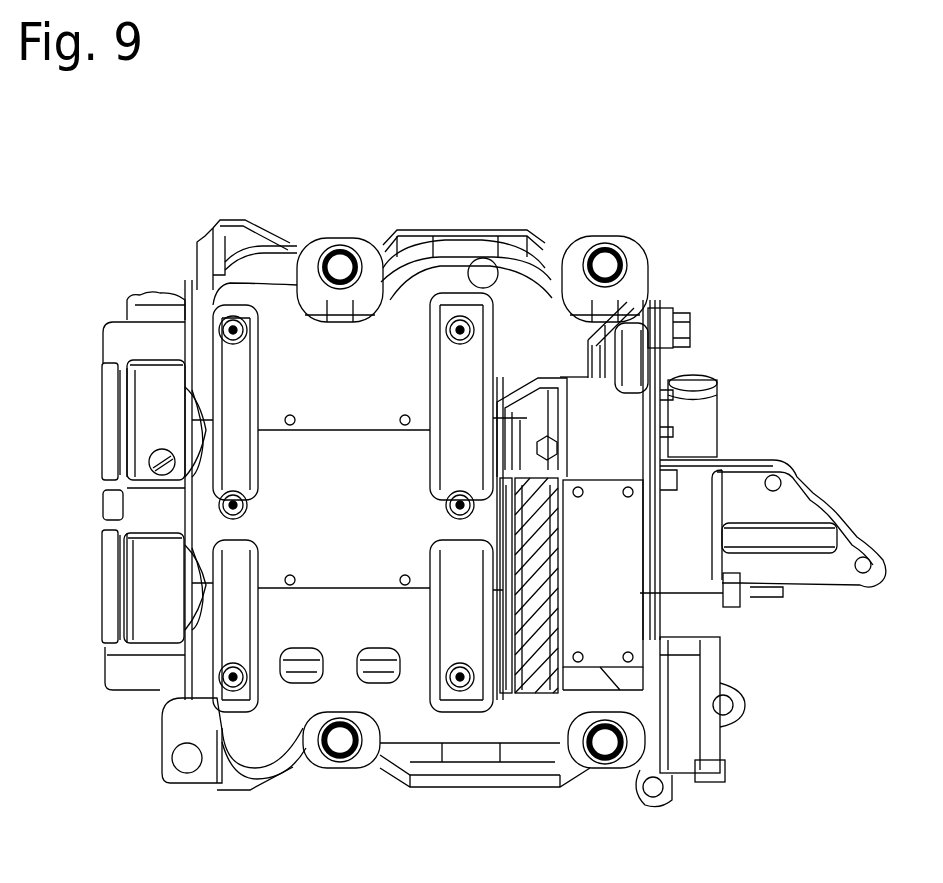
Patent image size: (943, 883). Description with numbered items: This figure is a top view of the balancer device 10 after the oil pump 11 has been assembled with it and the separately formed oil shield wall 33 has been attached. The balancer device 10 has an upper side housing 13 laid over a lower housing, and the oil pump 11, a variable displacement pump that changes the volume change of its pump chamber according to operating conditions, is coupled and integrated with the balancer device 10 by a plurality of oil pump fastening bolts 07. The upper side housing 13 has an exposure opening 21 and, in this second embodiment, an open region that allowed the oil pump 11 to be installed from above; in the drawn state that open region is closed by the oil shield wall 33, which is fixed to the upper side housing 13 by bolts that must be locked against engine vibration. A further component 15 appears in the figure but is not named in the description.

The upper side housing 13 is at (283, 325).
The balancer device 10 is at (645, 300).
The oil pump fastening bolts 07 is at (693, 318).
The oil pump 11 is at (807, 483).
The oil shield wall 33 is at (613, 607).
The exposure opening 21 is at (512, 678).
The rack gear 15 is at (530, 680).